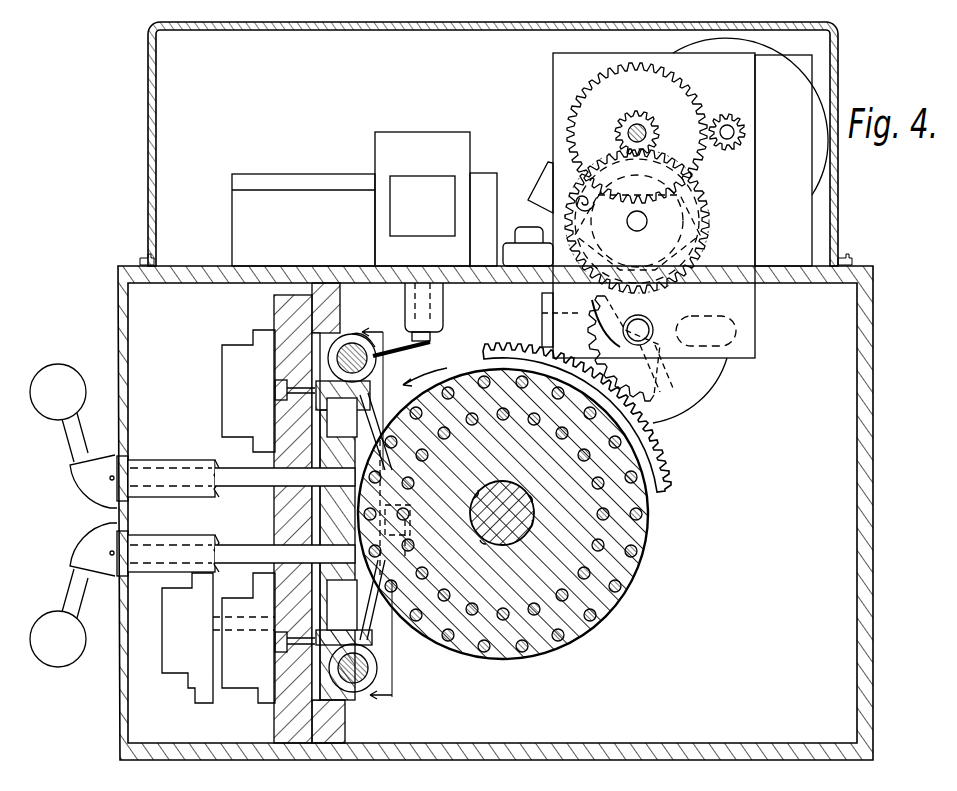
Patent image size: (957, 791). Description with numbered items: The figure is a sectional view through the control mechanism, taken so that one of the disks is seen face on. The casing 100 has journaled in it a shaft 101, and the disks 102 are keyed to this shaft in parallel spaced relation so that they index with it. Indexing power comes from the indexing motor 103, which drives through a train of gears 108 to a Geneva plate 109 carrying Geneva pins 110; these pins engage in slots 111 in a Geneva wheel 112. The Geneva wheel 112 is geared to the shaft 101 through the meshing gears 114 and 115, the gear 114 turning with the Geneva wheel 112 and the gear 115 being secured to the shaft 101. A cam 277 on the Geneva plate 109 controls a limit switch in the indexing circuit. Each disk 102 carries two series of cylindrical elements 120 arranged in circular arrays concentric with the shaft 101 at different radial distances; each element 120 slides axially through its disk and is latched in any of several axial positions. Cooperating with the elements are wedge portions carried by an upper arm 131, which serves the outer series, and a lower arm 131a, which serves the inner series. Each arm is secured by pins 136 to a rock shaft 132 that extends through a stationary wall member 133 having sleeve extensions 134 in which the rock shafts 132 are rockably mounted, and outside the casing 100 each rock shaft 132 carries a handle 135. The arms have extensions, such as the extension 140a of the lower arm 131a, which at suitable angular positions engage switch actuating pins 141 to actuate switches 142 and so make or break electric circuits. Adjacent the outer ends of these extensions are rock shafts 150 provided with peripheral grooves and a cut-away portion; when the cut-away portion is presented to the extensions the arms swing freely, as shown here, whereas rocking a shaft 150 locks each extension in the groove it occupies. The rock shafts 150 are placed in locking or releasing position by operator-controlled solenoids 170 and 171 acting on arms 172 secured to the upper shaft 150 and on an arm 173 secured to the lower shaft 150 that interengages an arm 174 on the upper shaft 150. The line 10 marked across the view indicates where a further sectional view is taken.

The direction of movement 10 is at (386, 515).
The casing 100 is at (867, 442).
The shaft 101 is at (534, 514).
The disks 102 is at (529, 513).
The indexing motor 103 is at (686, 50).
The train of gears 108 is at (713, 99).
The Geneva plate 109 is at (725, 142).
The Geneva pins 110 is at (722, 219).
The slots 111 is at (687, 320).
The Geneva wheel 112 is at (725, 378).
The gear 114 is at (692, 413).
The gear 115 is at (667, 446).
The elements 120 is at (600, 613).
The arm 131 is at (312, 437).
The lower arm 131a is at (334, 540).
The rock shaft 132 is at (252, 480).
The stationary wall member 133 is at (297, 280).
The sleeve extensions 134 is at (148, 459).
The handle 135 is at (68, 440).
The pins 136 is at (342, 605).
The extension 140a is at (273, 598).
The switch actuating pins 141 is at (292, 386).
The switches 142 is at (222, 365).
The rock shafts 150 is at (346, 338).
The solenoid 170 is at (436, 126).
The solenoid 171 is at (213, 700).
The arms 172 is at (452, 336).
The arm 173 is at (372, 612).
The arm 174 is at (342, 417).
The cam 277 is at (706, 199).